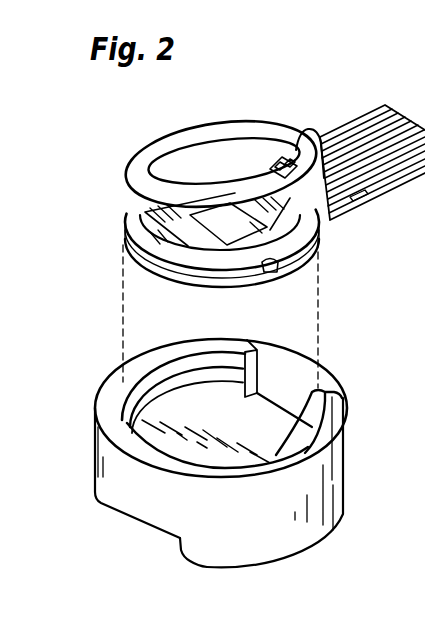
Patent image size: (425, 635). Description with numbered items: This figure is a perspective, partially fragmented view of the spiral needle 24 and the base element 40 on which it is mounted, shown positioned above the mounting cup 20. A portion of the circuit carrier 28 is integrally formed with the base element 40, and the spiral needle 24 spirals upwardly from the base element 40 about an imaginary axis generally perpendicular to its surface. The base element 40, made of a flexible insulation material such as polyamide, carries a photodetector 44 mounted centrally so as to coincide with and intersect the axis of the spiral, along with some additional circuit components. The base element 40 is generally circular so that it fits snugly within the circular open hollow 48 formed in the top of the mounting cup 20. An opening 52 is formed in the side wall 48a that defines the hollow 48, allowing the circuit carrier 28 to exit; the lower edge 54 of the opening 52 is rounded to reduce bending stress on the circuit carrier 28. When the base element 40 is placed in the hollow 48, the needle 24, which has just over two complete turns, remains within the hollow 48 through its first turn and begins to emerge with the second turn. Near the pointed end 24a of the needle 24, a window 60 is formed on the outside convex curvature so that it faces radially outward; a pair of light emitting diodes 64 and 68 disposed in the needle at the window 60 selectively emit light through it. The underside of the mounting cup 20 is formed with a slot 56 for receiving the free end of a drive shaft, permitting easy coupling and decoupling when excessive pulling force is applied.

The mounting cup 20 is at (107, 376).
The spiral needle 24 is at (172, 133).
The pointed end 24a is at (306, 128).
The circuit carrier 28 is at (372, 107).
The base element 40 is at (150, 274).
The photodetector 44 is at (148, 216).
The hollow 48 is at (255, 432).
The side wall 48a is at (213, 347).
The opening 52 is at (280, 376).
The lower edge 54 is at (285, 407).
The slot 56 is at (137, 527).
The window 60 is at (270, 165).
The light emitting diode 64 is at (333, 220).
The light emitting diode 68 is at (327, 240).